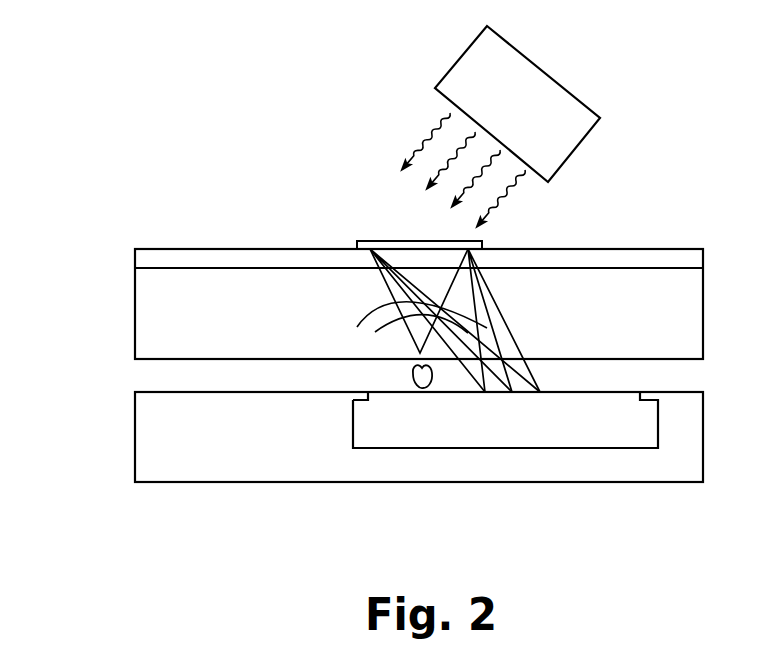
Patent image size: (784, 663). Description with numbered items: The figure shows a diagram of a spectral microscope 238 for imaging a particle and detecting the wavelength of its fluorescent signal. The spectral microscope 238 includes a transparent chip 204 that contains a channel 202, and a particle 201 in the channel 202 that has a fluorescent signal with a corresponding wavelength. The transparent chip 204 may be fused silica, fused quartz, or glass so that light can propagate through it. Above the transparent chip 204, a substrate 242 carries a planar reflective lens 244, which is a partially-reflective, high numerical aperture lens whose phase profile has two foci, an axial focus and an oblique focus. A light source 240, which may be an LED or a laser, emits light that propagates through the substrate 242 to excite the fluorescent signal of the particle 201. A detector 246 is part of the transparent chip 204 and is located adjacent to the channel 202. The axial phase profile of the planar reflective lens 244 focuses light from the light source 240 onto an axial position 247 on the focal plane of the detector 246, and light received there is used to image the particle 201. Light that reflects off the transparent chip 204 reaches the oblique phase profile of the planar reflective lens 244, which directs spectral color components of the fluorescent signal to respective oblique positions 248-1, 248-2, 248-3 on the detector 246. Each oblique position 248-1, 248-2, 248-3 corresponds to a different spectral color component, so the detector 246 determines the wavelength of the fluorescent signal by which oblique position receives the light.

The spectral microscope 238 is at (157, 63).
The light source 240 is at (462, 52).
The substrate 242 is at (135, 260).
The planar reflective lens 244 is at (380, 241).
The transparent chip 204 is at (135, 327).
The channel 202 is at (725, 358).
The detector 246 is at (367, 450).
The particle 201 is at (413, 377).
The axial position 247 is at (424, 388).
The oblique position 248-1 is at (485, 392).
The oblique position 248-2 is at (512, 392).
The oblique position 248-3 is at (540, 392).